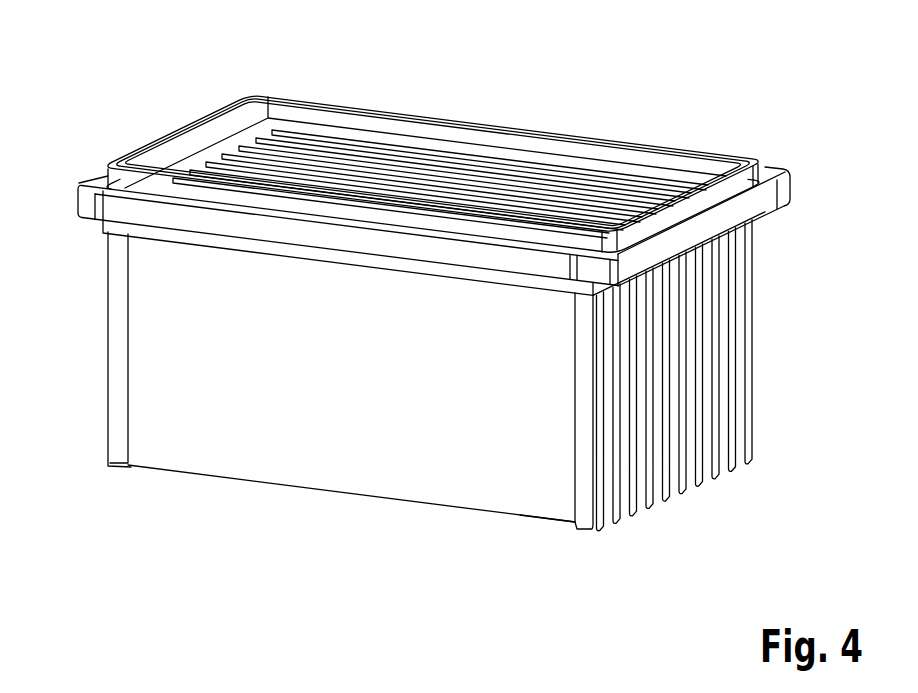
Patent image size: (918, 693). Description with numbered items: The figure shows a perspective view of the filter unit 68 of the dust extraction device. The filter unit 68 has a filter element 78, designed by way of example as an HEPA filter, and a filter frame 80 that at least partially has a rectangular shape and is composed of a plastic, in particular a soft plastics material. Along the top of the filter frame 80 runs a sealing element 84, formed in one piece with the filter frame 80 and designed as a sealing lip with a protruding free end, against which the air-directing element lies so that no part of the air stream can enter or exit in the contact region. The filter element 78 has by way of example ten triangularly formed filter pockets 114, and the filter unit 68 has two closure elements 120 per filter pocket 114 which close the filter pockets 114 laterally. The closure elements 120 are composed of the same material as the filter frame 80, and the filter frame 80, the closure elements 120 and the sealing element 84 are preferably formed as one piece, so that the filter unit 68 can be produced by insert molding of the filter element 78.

The filter unit 68 is at (588, 94).
The sealing element 84 is at (688, 156).
The filter frame 80 is at (780, 198).
The filter element 78 is at (306, 460).
The closure elements 120 is at (120, 446).
The filter pockets 114 is at (560, 524).